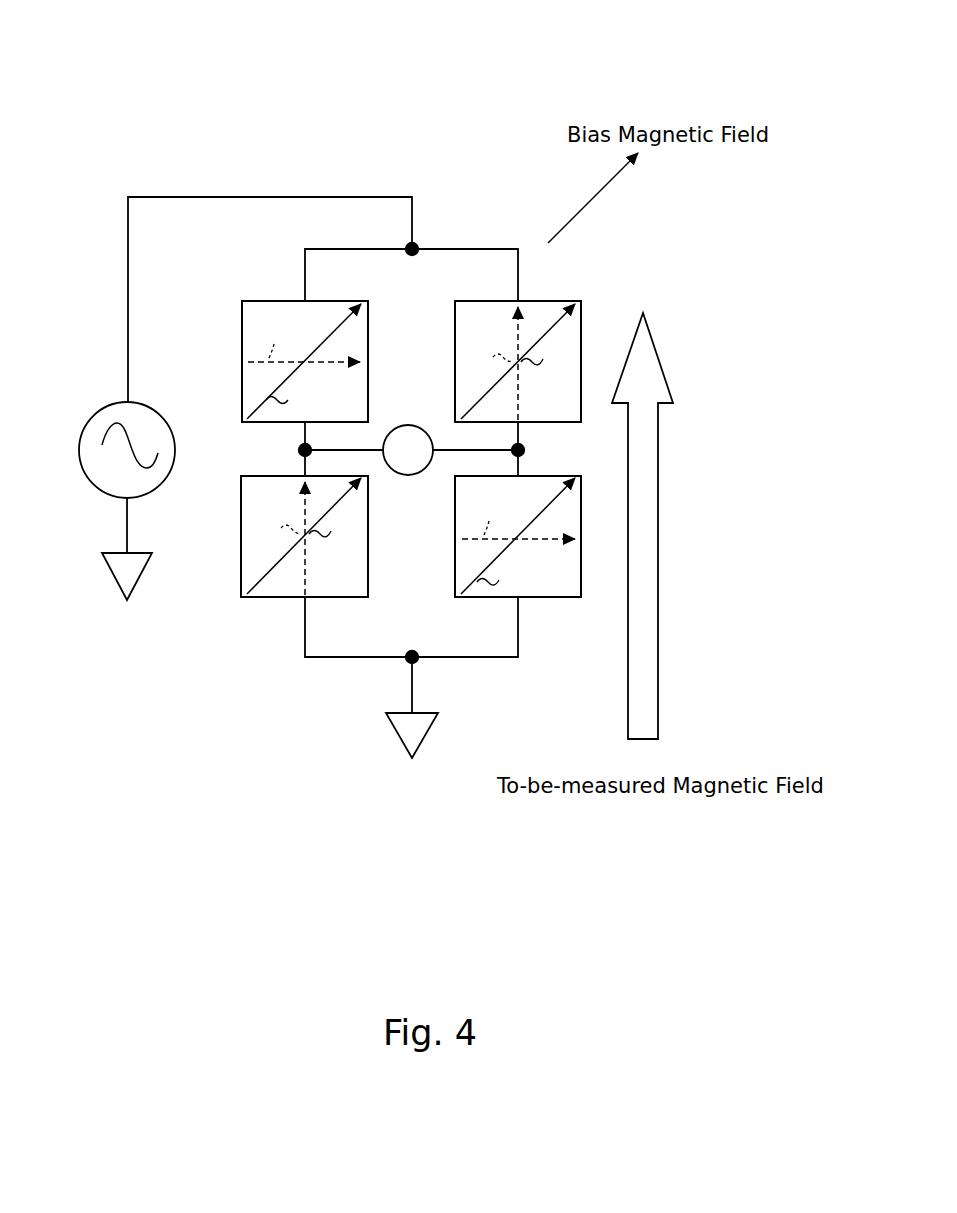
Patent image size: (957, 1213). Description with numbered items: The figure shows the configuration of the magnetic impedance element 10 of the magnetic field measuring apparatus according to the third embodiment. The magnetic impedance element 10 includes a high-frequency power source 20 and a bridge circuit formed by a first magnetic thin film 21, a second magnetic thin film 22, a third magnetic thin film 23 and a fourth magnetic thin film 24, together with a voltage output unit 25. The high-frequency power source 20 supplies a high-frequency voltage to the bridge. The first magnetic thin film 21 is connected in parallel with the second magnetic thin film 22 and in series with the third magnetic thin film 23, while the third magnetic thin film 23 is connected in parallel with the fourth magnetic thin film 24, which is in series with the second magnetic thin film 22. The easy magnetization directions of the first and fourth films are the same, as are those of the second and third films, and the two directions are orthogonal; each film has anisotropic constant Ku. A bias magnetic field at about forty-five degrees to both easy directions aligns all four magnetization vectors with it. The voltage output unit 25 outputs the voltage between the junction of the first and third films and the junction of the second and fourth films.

The magnetic impedance element 10 is at (108, 60).
The high-frequency power source 20 is at (78, 451).
The first magnetic thin film 21 is at (242, 318).
The second magnetic thin film 22 is at (455, 318).
The third magnetic thin film 23 is at (242, 497).
The fourth magnetic thin film 24 is at (455, 497).
The voltage output unit 25 is at (408, 423).